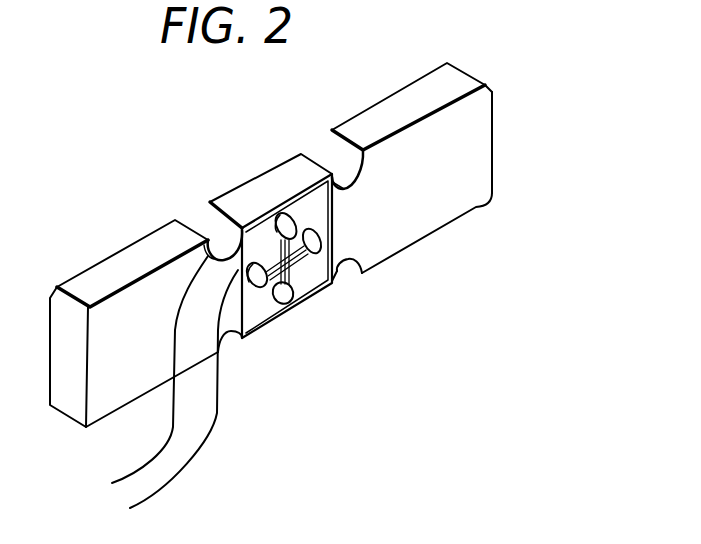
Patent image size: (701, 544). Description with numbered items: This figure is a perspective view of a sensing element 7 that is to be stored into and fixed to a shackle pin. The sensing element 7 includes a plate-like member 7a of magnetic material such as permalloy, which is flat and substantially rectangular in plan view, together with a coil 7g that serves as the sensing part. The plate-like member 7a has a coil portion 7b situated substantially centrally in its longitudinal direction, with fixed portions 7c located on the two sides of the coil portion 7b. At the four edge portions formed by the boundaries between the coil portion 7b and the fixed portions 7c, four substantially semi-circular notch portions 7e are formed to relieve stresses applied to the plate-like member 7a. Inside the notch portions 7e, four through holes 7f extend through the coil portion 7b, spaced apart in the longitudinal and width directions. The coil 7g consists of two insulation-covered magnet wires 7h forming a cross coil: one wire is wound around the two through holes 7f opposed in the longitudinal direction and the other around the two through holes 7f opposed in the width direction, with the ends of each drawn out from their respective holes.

The sensing element 7 is at (530, 138).
The plate-like member 7a is at (510, 90).
The coil portion 7b is at (246, 191).
The fixed portions 7c is at (123, 253).
The notch portions 7e is at (210, 220).
The through holes 7f is at (317, 230).
The coil 7g is at (305, 282).
The magnet wires 7h is at (177, 432).